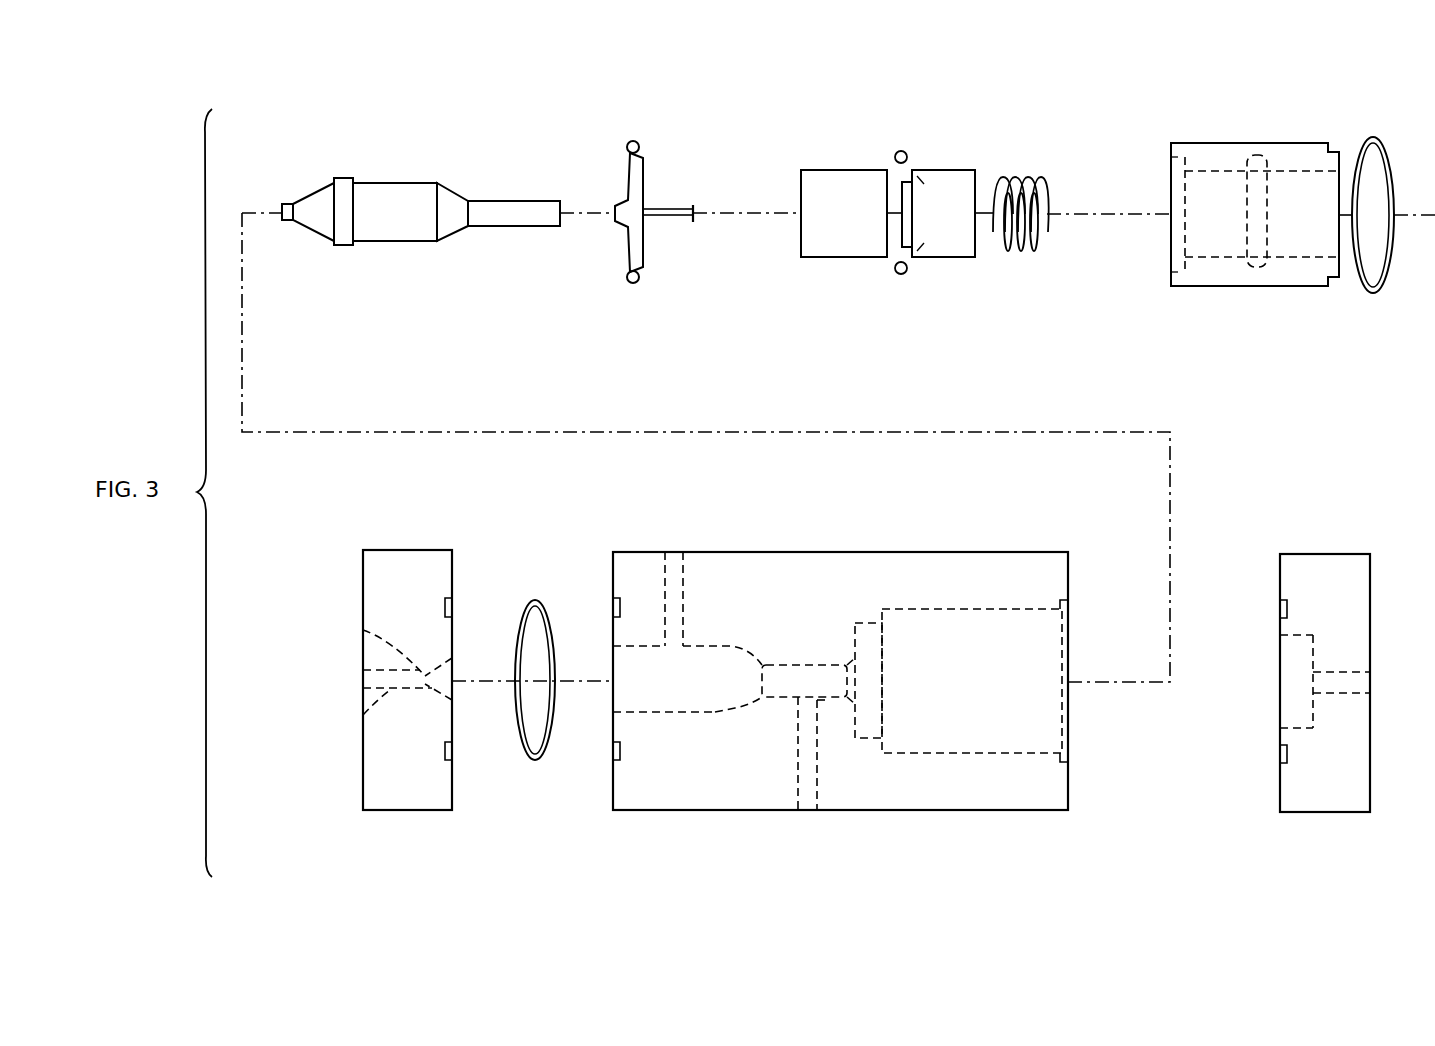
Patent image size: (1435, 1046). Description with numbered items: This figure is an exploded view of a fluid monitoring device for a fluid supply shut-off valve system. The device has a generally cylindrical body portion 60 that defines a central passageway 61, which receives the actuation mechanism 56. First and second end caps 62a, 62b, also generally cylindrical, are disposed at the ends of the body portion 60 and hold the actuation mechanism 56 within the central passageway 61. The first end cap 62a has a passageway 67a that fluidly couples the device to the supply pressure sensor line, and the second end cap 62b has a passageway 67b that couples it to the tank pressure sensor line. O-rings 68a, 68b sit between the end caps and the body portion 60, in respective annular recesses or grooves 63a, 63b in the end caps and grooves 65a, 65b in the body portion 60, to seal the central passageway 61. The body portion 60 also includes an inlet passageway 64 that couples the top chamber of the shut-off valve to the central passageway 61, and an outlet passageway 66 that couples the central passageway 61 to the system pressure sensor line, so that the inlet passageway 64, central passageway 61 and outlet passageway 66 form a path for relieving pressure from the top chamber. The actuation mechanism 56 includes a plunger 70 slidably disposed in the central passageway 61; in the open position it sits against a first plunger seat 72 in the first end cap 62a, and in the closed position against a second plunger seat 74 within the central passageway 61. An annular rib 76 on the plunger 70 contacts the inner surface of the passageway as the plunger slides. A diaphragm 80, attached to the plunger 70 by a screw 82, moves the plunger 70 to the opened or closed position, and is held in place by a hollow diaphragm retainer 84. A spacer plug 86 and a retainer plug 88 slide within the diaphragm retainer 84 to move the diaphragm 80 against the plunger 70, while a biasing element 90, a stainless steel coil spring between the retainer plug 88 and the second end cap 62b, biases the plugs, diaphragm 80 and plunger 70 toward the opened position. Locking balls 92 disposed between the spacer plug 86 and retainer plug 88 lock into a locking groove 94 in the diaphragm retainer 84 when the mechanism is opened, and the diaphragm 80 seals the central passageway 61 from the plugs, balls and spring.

The actuation mechanism 56 is at (812, 101).
The body portion 60 is at (848, 553).
The central passageway 61 is at (783, 668).
The first end cap 62a is at (415, 810).
The second end cap 62b is at (1340, 812).
The annular recess or groove 63a is at (452, 605).
The annular recess or groove 63b is at (1280, 608).
The inlet passageway 64 is at (813, 810).
The annular recess or groove 65a is at (613, 598).
The annular recess or groove 65b is at (1068, 606).
The outlet passageway 66 is at (678, 552).
The passageway 67a is at (363, 715).
The passageway 67b is at (1355, 672).
The O-ring 68a is at (535, 600).
The O-ring 68b is at (1373, 293).
The plunger 70 is at (370, 241).
The first plunger seat 72 is at (363, 630).
The second plunger seat 74 is at (722, 712).
The annular rib 76 is at (347, 178).
The diaphragm 80 is at (643, 163).
The screw 82 is at (678, 216).
The diaphragm retainer 84 is at (1240, 287).
The spacer plug 86 is at (828, 258).
The retainer plug 88 is at (950, 258).
The biasing element 90 is at (1042, 180).
The locking balls 92 is at (906, 153).
The locking groove 94 is at (1254, 165).